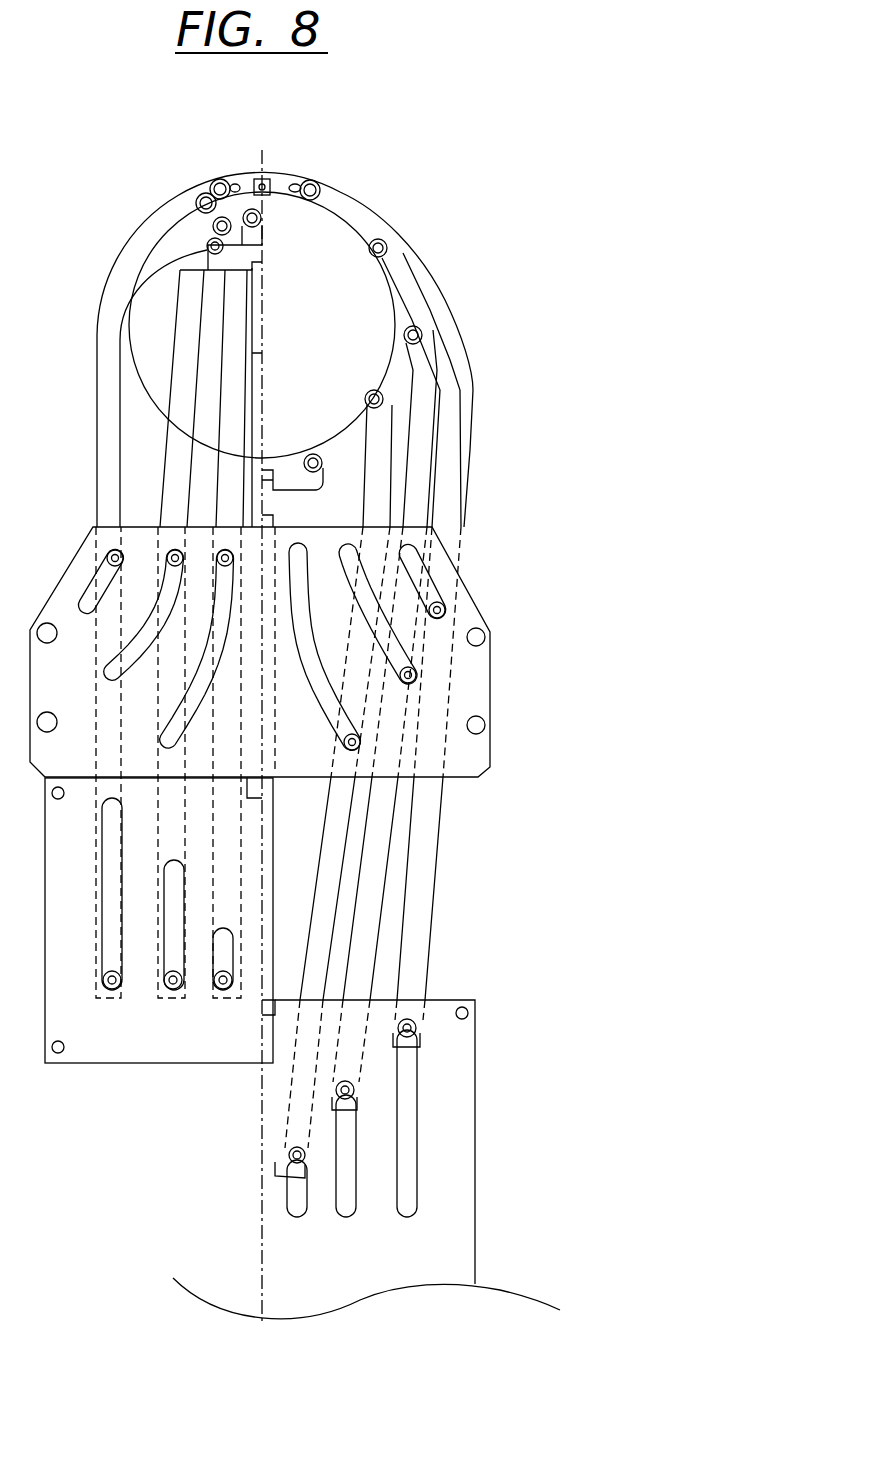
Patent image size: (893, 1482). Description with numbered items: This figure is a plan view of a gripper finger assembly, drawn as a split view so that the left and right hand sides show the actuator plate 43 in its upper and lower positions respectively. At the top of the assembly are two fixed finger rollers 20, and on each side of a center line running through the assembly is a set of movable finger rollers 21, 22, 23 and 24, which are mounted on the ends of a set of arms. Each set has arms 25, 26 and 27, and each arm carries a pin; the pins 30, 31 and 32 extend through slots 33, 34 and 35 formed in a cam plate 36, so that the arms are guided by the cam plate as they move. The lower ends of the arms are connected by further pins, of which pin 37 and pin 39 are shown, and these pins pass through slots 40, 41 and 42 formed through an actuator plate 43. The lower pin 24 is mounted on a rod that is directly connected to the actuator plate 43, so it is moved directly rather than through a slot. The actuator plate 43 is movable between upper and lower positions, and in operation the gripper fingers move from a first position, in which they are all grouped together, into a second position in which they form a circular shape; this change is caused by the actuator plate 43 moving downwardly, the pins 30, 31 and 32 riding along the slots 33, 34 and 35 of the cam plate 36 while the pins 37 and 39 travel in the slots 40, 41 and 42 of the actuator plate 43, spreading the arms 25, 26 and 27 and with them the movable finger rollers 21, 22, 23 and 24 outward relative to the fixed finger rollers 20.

The fixed finger rollers 20 is at (316, 200).
The movable finger roller 21 is at (387, 250).
The movable finger roller 22 is at (422, 328).
The movable finger roller 23 is at (382, 403).
The lower pin 24 is at (323, 467).
The arm 25 is at (450, 522).
The arm 26 is at (423, 483).
The arm 27 is at (327, 915).
The pin 30 is at (445, 611).
The pin 31 is at (416, 677).
The pin 32 is at (452, 776).
The slot 33 is at (417, 582).
The slot 34 is at (383, 647).
The slot 35 is at (360, 728).
The cam plate 36 is at (453, 776).
The further pin 37 is at (414, 1020).
The further pin 39 is at (290, 1157).
The slot 40 is at (408, 1118).
The slot 41 is at (348, 1197).
The slot 42 is at (292, 1198).
The actuator plate 43 is at (455, 1215).